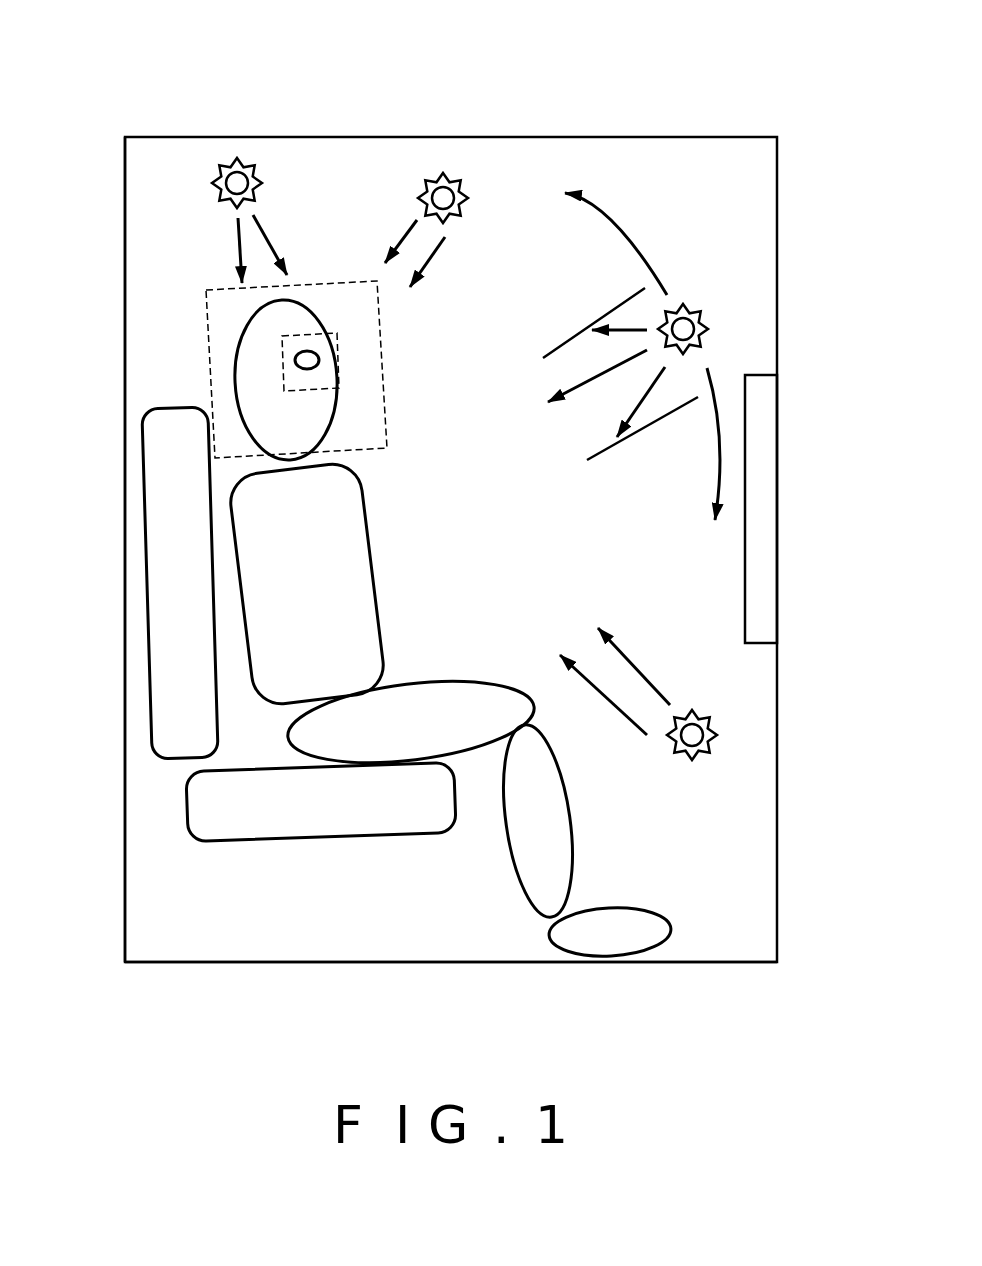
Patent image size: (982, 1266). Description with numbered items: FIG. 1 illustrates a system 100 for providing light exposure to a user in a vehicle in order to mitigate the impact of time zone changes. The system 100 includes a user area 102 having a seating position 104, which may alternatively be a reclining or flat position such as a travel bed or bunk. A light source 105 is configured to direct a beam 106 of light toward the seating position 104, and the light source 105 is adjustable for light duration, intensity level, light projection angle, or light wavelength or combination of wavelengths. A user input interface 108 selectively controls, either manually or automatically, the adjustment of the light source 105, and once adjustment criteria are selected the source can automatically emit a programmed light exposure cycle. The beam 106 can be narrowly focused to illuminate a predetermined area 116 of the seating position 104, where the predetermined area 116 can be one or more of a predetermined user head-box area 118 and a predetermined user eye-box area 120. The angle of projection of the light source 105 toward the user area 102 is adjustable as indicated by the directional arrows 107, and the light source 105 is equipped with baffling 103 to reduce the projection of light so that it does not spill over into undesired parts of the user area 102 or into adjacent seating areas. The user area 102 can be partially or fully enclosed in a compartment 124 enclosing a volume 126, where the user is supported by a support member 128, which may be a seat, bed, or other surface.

The system 100 is at (438, 95).
The user area 102 is at (252, 716).
The baffling 103 is at (673, 417).
The seating position 104 is at (243, 728).
The light source 105 is at (703, 312).
The beam 106 is at (583, 365).
The directional arrows 107 is at (605, 213).
The user input interface 108 is at (762, 463).
The predetermined area 116 is at (178, 243).
The user head-box area 118 is at (335, 282).
The user eye-box area 120 is at (337, 348).
The compartment 124 is at (125, 638).
The volume 126 is at (387, 911).
The support member 128 is at (265, 815).